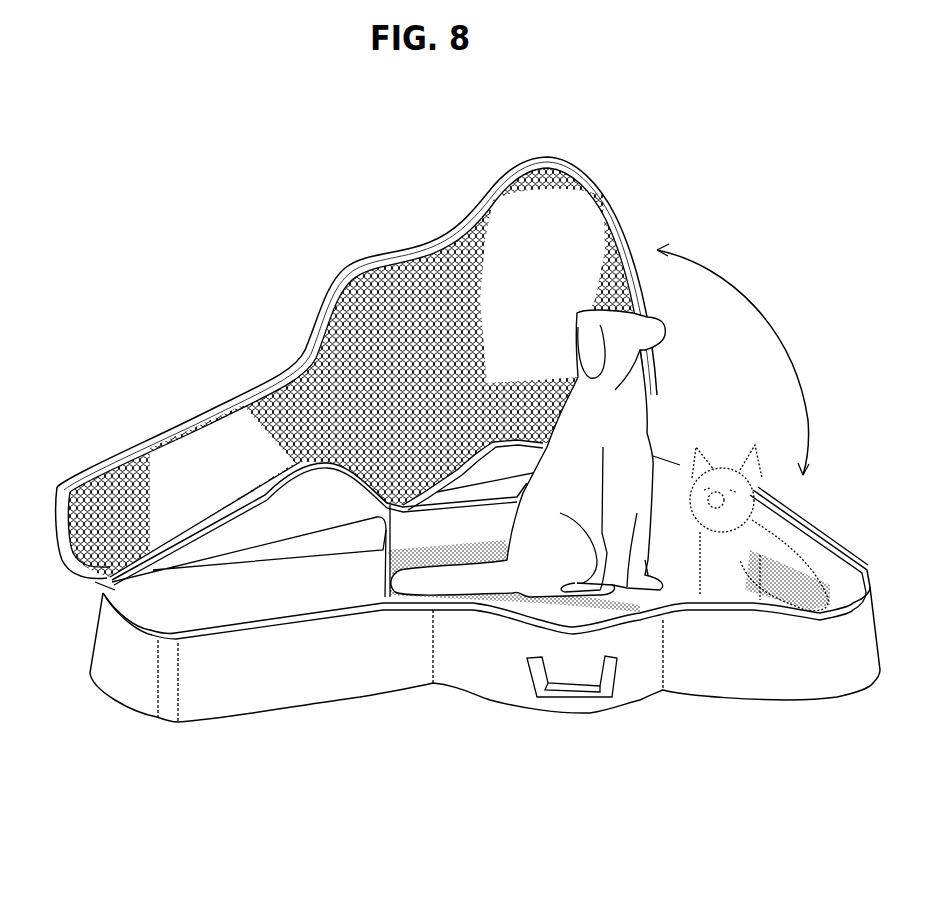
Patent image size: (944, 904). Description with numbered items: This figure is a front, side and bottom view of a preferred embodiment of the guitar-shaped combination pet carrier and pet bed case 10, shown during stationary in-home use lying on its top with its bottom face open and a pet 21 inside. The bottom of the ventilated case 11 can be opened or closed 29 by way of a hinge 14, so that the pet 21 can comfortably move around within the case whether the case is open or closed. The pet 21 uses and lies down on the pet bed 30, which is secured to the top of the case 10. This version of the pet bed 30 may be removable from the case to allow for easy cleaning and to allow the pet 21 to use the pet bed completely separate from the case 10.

The guitar-shaped combination pet carrier and pet bed case 10 is at (482, 112).
The ventilated case 11 is at (568, 252).
The hinge 14 is at (100, 592).
The pet 21 is at (637, 437).
The open or closed bottom of the case 29 is at (790, 348).
The pet bed 30 is at (505, 620).